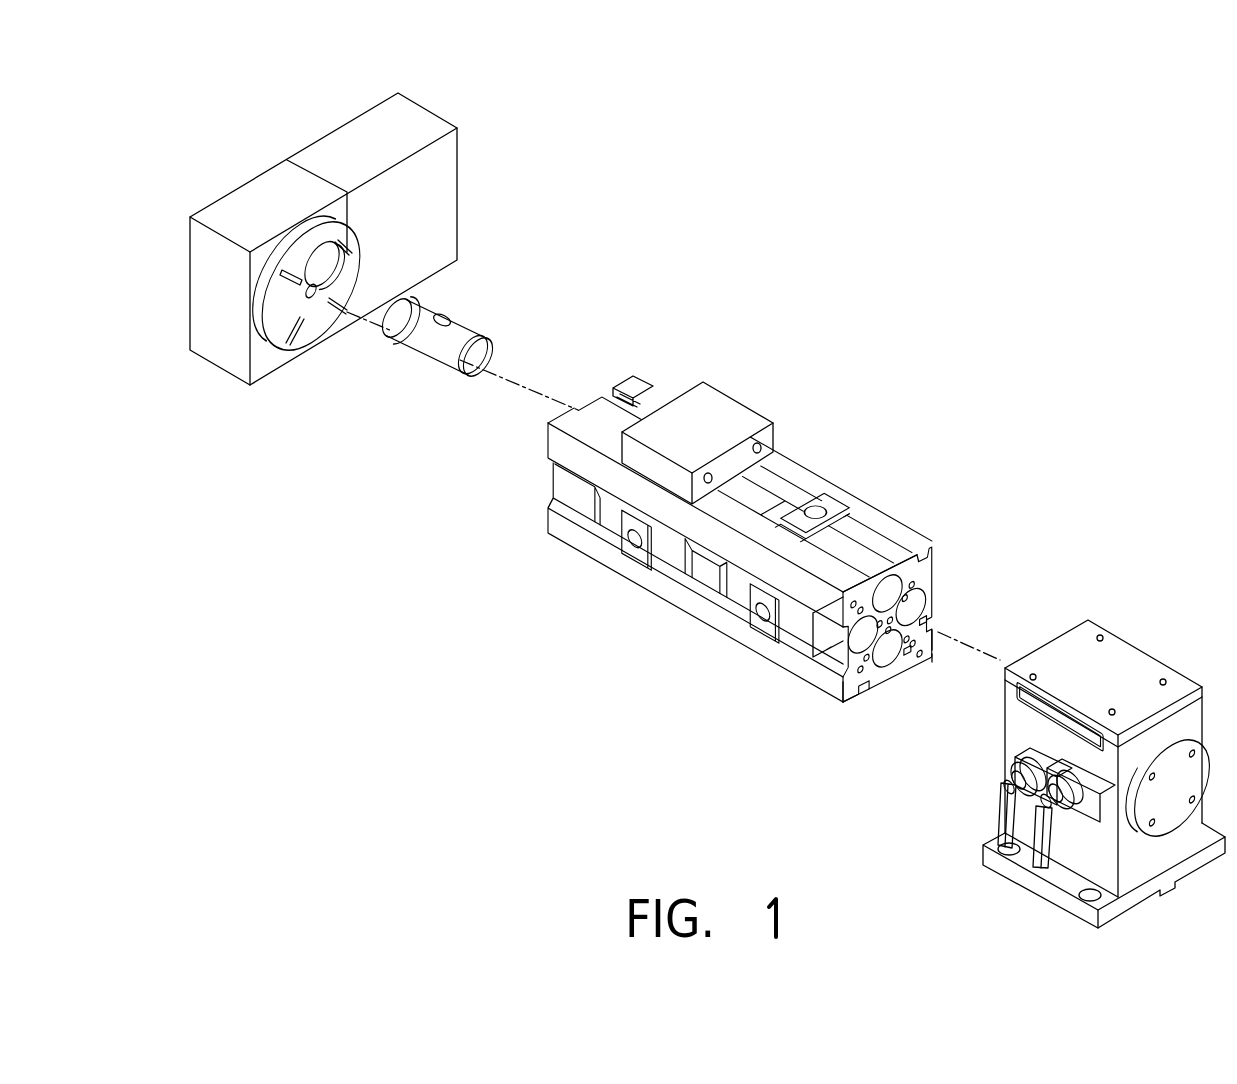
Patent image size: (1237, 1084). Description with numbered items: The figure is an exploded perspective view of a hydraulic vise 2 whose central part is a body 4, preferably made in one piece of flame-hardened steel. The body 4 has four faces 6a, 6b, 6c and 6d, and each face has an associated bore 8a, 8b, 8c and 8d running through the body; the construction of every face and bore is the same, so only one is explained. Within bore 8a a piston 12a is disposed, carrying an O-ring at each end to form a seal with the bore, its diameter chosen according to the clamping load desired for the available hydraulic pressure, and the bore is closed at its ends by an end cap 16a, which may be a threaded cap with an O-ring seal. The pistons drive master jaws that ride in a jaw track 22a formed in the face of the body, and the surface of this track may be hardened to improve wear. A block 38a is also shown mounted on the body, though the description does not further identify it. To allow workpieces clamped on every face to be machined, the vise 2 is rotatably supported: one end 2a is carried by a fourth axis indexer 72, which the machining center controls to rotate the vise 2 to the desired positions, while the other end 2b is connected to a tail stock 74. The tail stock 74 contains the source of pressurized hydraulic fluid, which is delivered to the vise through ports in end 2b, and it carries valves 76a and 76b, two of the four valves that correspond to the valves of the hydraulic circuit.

The hydraulic vise 2 is at (946, 231).
The end of vise 2a is at (547, 440).
The other end of vise 2b is at (926, 655).
The body 4 is at (933, 552).
The face 6a is at (885, 527).
The face 6b is at (832, 687).
The face 6c is at (856, 705).
The face 6d is at (935, 632).
The bore 8a is at (888, 580).
The bore 8b is at (855, 642).
The bore 8c is at (881, 650).
The bore 8d is at (917, 598).
The piston 12a is at (462, 332).
The end cap 16a is at (326, 266).
The jaw track 22a is at (598, 410).
The clamping block 38a is at (743, 420).
The fourth axis indexer 72 is at (213, 347).
The tail stock 74 is at (1072, 640).
The valve 76a is at (1000, 792).
The valve 76b is at (1032, 866).